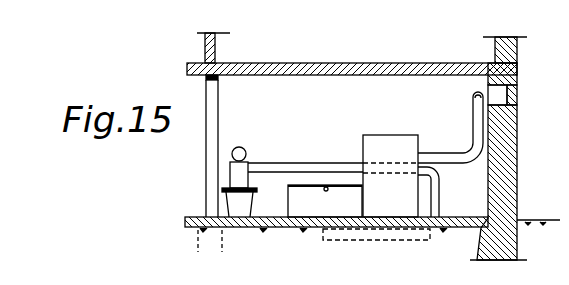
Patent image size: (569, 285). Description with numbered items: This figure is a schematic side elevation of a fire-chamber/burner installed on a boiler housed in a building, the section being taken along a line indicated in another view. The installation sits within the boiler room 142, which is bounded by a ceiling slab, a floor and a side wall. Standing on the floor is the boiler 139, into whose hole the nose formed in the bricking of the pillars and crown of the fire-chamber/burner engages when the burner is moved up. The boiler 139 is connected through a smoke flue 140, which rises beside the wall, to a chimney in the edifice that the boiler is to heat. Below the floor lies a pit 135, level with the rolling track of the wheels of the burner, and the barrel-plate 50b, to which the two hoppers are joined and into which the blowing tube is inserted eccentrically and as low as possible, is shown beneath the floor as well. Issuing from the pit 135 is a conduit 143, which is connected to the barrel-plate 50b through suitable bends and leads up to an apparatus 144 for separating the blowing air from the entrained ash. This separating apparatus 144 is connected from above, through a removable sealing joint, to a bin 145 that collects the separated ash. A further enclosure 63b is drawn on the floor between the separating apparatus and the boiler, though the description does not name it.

The boiler room 142 is at (318, 91).
The pit 135 is at (437, 240).
The boiler 139 is at (390, 176).
The enclosure unit 63b is at (340, 196).
The apparatus for separating the blowing air and the entrained ash 144 is at (243, 172).
The bin 145 is at (242, 208).
The smoke flue 140 is at (437, 158).
The conduit 143 is at (434, 208).
The barrel-plate 50b is at (380, 241).